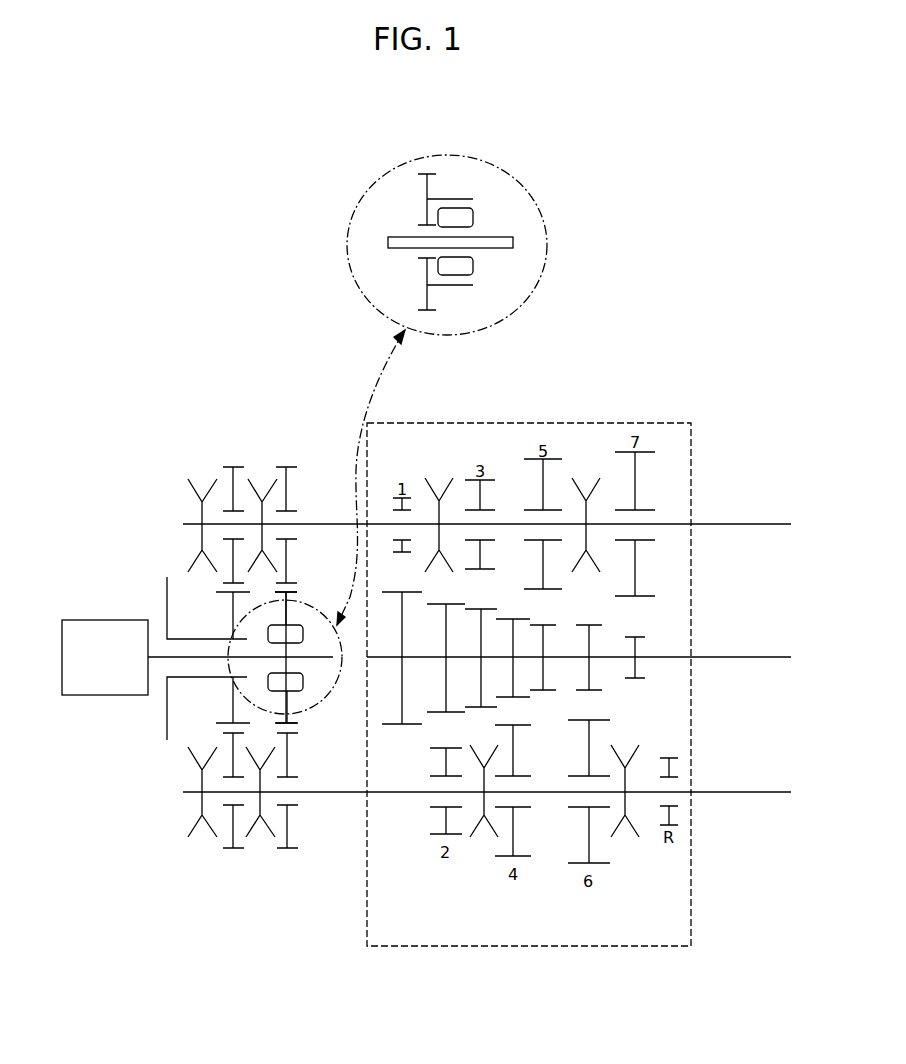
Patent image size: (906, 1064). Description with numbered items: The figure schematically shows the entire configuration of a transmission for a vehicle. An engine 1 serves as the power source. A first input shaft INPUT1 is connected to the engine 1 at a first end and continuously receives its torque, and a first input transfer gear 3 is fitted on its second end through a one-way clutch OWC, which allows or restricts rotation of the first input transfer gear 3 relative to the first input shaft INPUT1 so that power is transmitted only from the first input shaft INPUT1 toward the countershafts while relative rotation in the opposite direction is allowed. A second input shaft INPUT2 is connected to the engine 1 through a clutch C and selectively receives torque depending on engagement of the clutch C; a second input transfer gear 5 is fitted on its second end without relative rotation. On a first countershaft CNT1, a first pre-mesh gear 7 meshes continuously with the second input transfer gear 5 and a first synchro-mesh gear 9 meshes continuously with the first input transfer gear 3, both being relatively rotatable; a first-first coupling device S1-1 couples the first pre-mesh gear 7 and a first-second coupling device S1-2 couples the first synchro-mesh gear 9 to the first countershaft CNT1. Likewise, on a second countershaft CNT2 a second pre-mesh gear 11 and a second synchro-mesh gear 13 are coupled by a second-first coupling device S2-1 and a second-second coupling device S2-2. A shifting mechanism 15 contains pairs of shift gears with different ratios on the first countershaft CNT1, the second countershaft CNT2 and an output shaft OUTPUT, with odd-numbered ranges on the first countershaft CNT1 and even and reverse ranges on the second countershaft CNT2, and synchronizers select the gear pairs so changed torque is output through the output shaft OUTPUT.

The engine 1 is at (80, 697).
The clutch C is at (167, 708).
The first input transfer gear 3 is at (427, 187).
The second input transfer gear 5 is at (233, 703).
The first pre-mesh gear 7 is at (236, 467).
The first synchro-mesh gear 9 is at (288, 467).
The second pre-mesh gear 11 is at (233, 840).
The second synchro-mesh gear 13 is at (278, 847).
The shifting mechanism 15 is at (522, 418).
The one-way clutch OWC is at (473, 216).
The first input shaft INPUT1 is at (395, 248).
The second input shaft INPUT2 is at (185, 678).
The first-first coupling device S1-1 is at (192, 490).
The first-second coupling device S1-2 is at (265, 480).
The second-first coupling device S2-1 is at (193, 827).
The second-second coupling device S2-2 is at (268, 827).
The first countershaft CNT1 is at (740, 522).
The output shaft OUTPUT is at (740, 655).
The second countershaft CNT2 is at (740, 790).